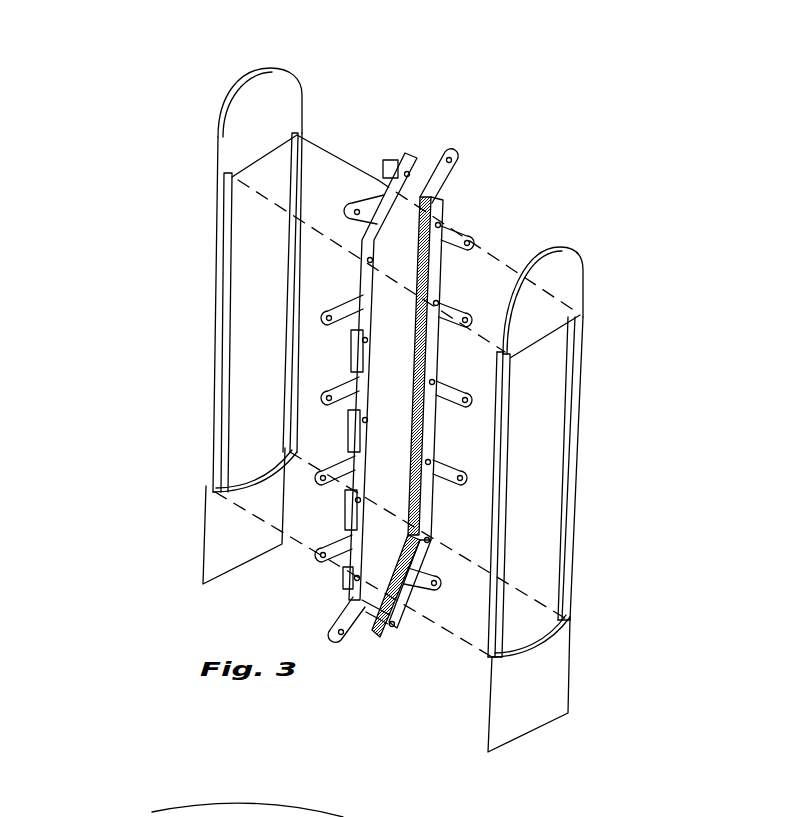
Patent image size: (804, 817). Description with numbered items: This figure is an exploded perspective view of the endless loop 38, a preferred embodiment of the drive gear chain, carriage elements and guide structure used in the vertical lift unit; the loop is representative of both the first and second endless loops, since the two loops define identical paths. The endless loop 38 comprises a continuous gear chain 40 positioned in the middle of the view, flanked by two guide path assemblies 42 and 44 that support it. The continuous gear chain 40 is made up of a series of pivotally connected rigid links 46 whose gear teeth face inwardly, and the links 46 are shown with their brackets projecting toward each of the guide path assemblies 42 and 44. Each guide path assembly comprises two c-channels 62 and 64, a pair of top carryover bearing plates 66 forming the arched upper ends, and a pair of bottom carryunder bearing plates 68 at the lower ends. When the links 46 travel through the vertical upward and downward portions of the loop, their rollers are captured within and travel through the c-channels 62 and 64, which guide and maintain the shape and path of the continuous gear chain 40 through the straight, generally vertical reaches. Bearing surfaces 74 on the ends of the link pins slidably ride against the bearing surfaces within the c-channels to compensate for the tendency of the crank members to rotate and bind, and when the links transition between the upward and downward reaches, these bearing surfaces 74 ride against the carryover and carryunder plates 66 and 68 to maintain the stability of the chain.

The endless loop 38 is at (557, 205).
The continuous gear chain 40 is at (407, 354).
The guide path assembly 42 is at (617, 400).
The guide path assembly 44 is at (371, 396).
The link 46 is at (383, 188).
The c-channel 62 is at (290, 427).
The c-channel 64 is at (212, 380).
The top carryover bearing plate 66 is at (238, 92).
The bottom carryunder bearing plate 68 is at (205, 538).
The bearing surface 74 is at (432, 160).